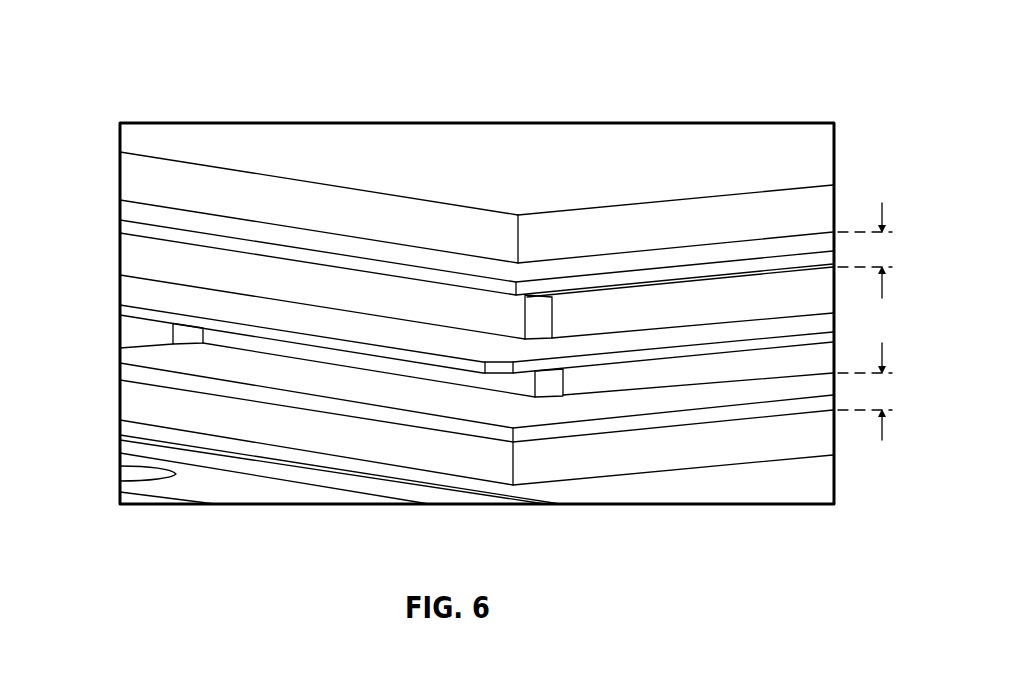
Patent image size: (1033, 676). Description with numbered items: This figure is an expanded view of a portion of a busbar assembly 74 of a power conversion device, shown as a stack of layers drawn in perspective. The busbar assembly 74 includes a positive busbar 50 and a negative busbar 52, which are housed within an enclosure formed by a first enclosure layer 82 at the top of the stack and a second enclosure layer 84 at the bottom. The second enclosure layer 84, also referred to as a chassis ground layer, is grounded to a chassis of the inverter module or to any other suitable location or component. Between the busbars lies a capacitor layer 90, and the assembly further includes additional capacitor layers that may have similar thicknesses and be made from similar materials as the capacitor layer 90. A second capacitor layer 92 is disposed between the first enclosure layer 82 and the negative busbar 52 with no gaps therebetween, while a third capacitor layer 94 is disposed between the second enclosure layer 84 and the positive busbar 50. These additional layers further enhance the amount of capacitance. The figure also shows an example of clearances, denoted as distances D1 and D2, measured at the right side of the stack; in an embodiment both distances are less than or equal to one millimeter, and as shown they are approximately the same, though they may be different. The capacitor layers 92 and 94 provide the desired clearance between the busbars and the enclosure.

The busbar assembly 74 is at (115, 56).
The first enclosure layer 82 is at (650, 132).
The second capacitor layer 92 is at (133, 209).
The negative busbar 52 is at (130, 261).
The capacitor layer 90 is at (130, 292).
The positive busbar 50 is at (130, 331).
The third capacitor layer 94 is at (135, 374).
The second enclosure layer 84 is at (555, 463).
The distance D1 is at (886, 210).
The distance D2 is at (882, 432).